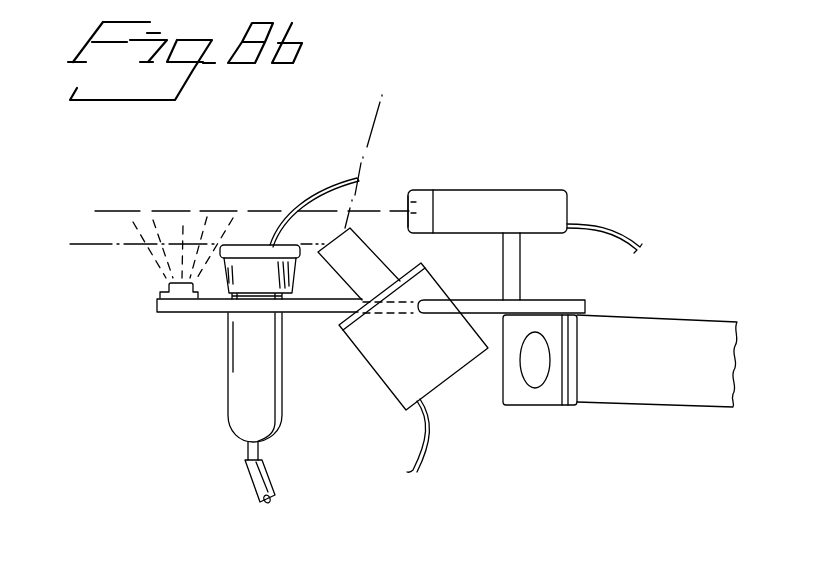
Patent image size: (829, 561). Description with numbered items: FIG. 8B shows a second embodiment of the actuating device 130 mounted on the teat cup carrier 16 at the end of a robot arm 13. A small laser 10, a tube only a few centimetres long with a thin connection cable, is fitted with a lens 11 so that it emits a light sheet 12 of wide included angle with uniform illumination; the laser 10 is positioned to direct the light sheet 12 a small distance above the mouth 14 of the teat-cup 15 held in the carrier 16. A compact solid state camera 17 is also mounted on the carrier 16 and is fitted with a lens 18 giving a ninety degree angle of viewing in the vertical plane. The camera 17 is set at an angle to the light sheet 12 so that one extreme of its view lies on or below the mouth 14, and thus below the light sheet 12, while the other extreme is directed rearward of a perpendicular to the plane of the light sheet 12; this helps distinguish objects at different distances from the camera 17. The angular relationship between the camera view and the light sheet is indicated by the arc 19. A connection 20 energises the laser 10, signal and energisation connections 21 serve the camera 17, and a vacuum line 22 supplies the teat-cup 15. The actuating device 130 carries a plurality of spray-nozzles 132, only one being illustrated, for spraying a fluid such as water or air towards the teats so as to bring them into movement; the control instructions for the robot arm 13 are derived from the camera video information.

The laser 10 is at (505, 190).
The lens 11 is at (414, 202).
The light sheet 12 is at (161, 210).
The robot arm 13 is at (650, 403).
The mouth of teat-cup 14 is at (248, 247).
The teat-cup 15 is at (240, 355).
The carrier 16 is at (316, 314).
The camera 17 is at (375, 352).
The lens 18 is at (375, 270).
The pivot arc 19 is at (309, 196).
The connection 20 is at (607, 223).
The signal and energisation connections 21 is at (418, 435).
The vacuum line 22 is at (248, 475).
The actuating device 130 is at (135, 297).
The spray-nozzle 132 is at (163, 288).